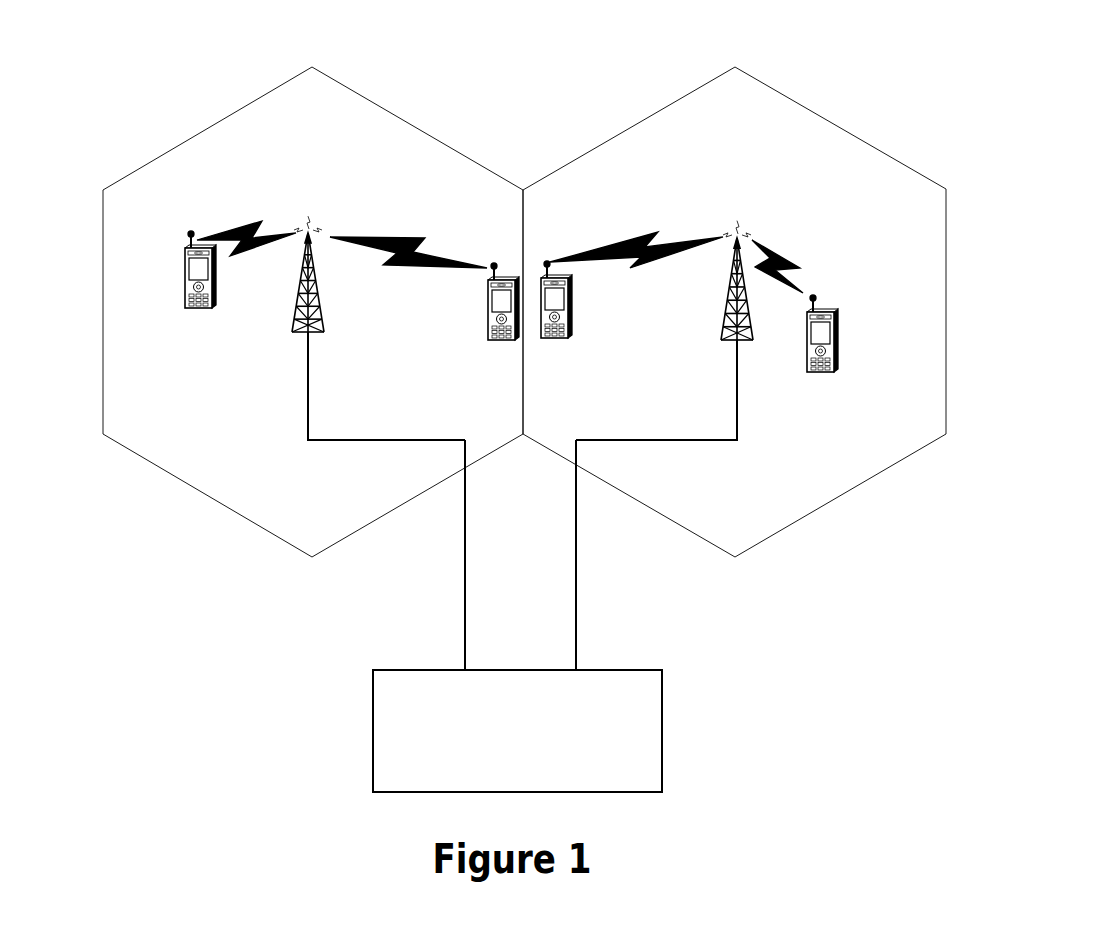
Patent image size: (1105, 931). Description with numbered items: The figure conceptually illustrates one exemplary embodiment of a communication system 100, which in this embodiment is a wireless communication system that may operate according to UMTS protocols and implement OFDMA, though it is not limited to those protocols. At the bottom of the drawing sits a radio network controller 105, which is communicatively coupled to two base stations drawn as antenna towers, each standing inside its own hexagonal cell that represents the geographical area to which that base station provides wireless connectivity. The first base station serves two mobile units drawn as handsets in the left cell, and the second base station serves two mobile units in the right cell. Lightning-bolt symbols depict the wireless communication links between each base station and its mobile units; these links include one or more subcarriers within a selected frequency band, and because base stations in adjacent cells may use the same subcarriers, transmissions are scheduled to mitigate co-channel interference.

The communication system 100 is at (996, 89).
The radio network controller 105 is at (513, 782).